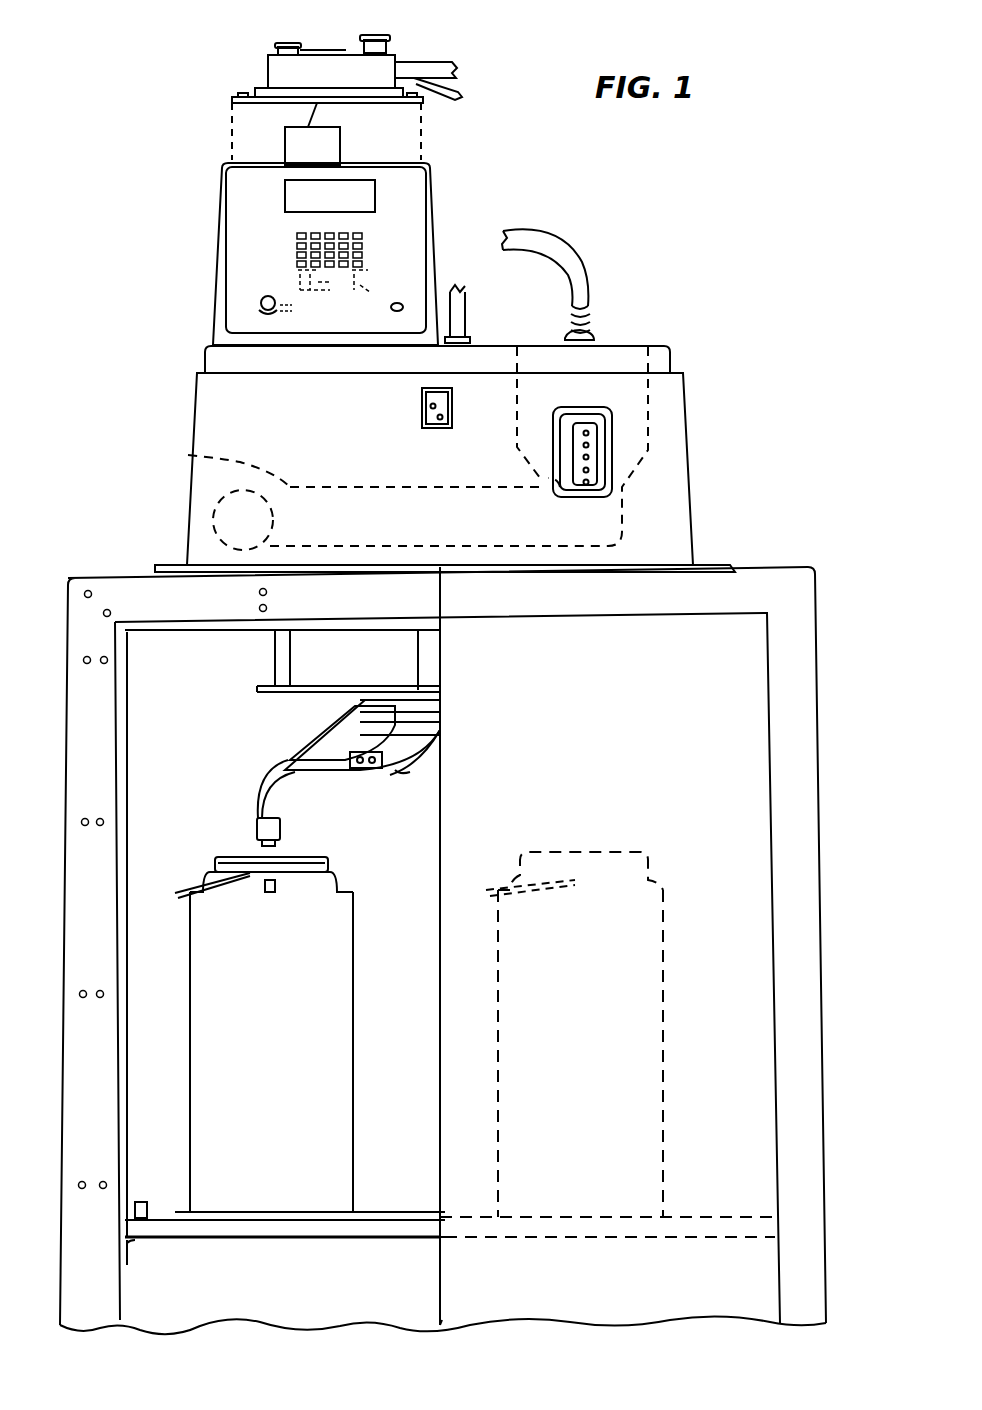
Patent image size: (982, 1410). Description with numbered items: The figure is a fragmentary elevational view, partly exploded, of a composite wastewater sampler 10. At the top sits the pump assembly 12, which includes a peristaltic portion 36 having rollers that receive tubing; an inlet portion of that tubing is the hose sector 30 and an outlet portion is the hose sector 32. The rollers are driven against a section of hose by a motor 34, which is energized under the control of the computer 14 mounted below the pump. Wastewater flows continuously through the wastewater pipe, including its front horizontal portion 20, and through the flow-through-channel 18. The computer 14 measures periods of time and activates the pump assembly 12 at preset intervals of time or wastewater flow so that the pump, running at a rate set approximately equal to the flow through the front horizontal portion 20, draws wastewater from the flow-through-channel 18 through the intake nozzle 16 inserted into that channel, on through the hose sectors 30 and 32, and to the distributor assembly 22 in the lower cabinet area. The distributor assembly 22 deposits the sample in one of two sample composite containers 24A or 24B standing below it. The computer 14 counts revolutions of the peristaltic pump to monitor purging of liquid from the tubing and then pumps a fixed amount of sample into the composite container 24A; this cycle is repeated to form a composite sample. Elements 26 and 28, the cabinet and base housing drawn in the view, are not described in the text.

The composite wastewater sampler 10 is at (686, 260).
The pump assembly 12 is at (443, 50).
The computer 14 is at (438, 190).
The intake nozzle 16 is at (588, 336).
The flow-through-channel 18 is at (637, 417).
The front horizontal portion of the wastewater pipe 20 is at (188, 455).
The distributor assembly 22 is at (257, 778).
The sample composite container 24A is at (335, 960).
The sample composite container 24B is at (643, 962).
The cabinet 26 is at (827, 690).
The base unit 28 is at (703, 503).
The hose sector (inlet portion of tubing) 30 is at (404, 62).
The hose sector (outlet portion of tubing) 32 is at (458, 80).
The motor 34 is at (297, 145).
The peristaltic portion 36 is at (277, 72).